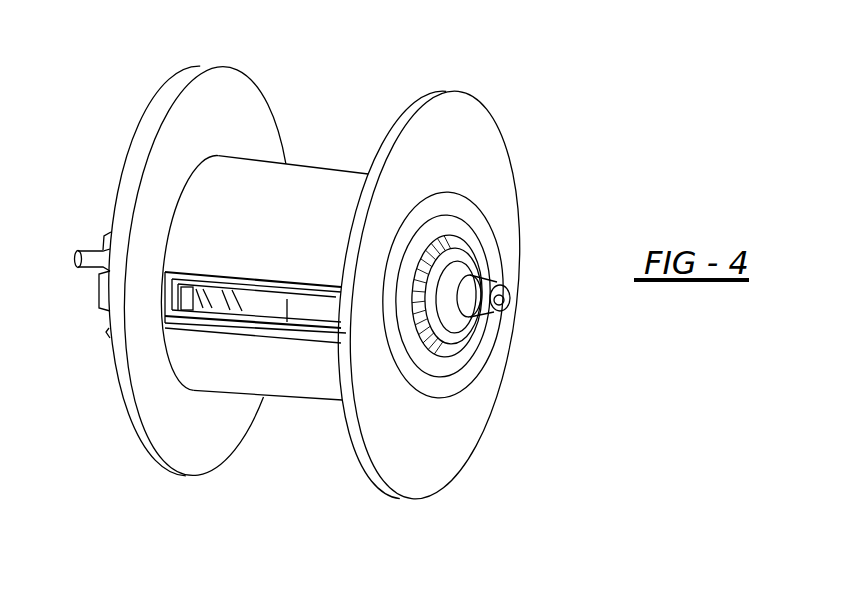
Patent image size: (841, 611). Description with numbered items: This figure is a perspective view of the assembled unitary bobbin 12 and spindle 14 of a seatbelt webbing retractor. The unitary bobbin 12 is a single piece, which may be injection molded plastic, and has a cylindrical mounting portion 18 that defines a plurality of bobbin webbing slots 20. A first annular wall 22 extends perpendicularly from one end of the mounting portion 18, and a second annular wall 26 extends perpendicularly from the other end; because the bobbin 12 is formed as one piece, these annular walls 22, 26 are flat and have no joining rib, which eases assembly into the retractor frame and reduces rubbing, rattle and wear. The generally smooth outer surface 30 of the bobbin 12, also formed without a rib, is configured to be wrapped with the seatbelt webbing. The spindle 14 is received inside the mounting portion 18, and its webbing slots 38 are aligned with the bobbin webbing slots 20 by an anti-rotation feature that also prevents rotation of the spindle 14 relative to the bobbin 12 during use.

The unitary bobbin 12 is at (345, 288).
The spindle 14 is at (493, 313).
The mounting portion 18 is at (270, 217).
The bobbin webbing slots 20 is at (313, 313).
The first annular wall 22 is at (470, 147).
The second annular wall 26 is at (173, 150).
The outer surface 30 is at (257, 207).
The webbing slots 38 is at (293, 330).